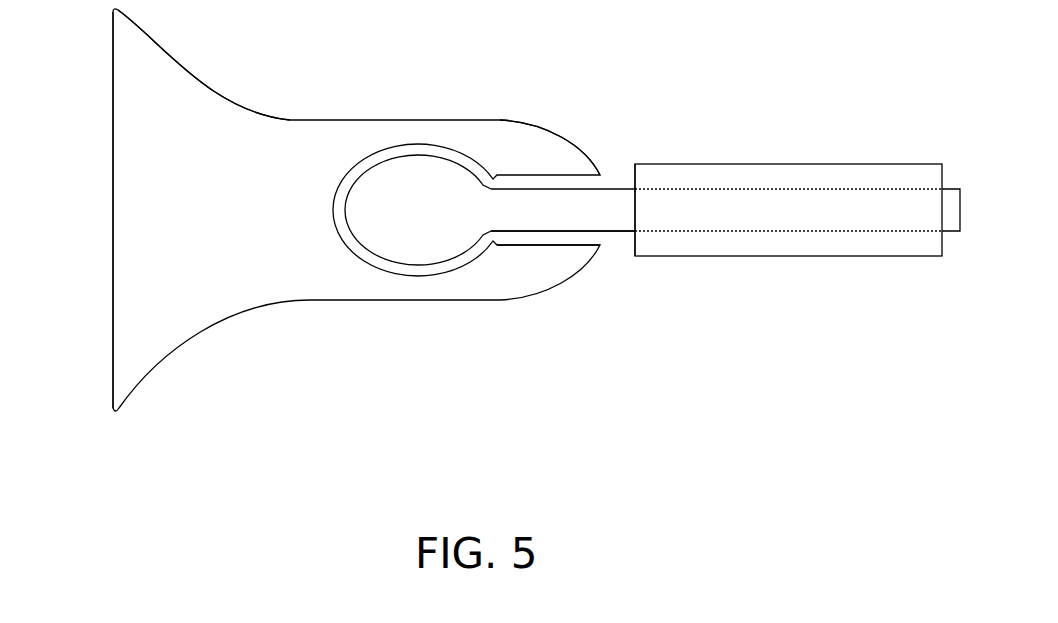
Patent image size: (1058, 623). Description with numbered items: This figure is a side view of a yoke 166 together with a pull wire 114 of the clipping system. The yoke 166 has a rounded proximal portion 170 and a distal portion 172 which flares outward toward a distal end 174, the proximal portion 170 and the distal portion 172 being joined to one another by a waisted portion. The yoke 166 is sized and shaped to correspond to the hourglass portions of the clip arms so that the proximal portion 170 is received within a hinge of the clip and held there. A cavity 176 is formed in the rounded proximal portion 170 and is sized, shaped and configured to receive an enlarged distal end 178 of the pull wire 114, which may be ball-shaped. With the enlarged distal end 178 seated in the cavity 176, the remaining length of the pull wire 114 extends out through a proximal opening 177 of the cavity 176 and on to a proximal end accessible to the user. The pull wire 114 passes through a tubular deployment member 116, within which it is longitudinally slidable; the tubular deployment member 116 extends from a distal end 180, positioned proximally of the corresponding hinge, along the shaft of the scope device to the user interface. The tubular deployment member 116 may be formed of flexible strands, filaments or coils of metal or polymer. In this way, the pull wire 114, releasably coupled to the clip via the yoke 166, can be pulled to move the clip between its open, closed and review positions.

The pull wire 114 is at (612, 207).
The tubular deployment member 116 is at (822, 177).
The yoke 166 is at (272, 135).
The rounded proximal portion 170 is at (503, 132).
The distal portion 172 is at (180, 97).
The distal end 174 is at (113, 67).
The cavity 176 is at (395, 260).
The proximal opening 177 is at (545, 237).
The enlarged distal end 178 is at (424, 187).
The distal end 180 is at (649, 175).